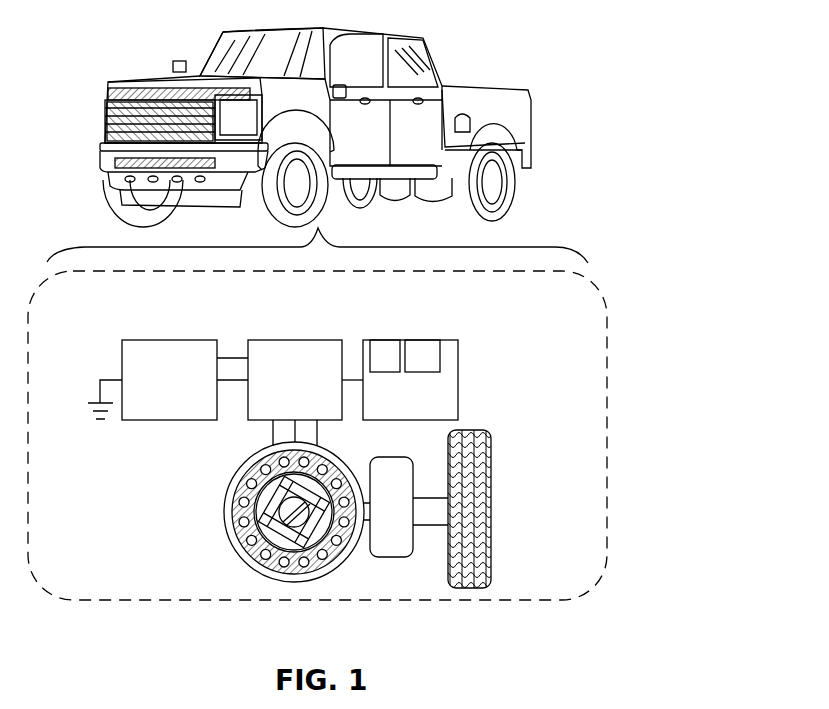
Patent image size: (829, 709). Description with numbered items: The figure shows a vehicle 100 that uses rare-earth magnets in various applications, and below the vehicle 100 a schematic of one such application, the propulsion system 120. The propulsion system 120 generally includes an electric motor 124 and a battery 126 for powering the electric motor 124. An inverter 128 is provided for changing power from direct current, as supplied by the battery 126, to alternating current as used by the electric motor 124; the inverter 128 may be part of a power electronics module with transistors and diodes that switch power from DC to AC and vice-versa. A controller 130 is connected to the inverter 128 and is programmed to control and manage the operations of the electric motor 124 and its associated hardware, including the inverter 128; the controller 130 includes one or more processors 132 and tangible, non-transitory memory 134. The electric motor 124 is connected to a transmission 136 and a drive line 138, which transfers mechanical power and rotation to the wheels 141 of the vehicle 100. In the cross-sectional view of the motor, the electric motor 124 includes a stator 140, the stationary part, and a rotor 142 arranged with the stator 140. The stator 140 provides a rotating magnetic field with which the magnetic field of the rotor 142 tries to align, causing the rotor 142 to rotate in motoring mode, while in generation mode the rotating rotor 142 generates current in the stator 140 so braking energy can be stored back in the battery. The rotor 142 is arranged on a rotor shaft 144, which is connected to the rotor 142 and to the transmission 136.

The vehicle 100 is at (472, 34).
The propulsion system 120 is at (559, 231).
The electric motor 124 is at (312, 338).
The battery 126 is at (183, 338).
The inverter 128 is at (237, 362).
The controller 130 is at (447, 338).
The processor 132 is at (420, 350).
The memory 134 is at (394, 350).
The transmission 136 is at (392, 545).
The drive line 138 is at (441, 515).
The stator 140 is at (240, 490).
The wheel 141 is at (467, 588).
The rotor 142 is at (248, 533).
The rotor shaft 144 is at (288, 522).